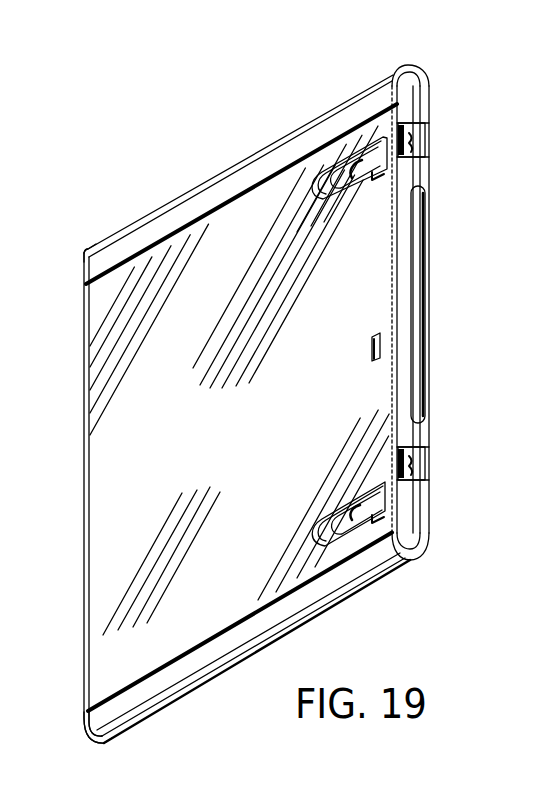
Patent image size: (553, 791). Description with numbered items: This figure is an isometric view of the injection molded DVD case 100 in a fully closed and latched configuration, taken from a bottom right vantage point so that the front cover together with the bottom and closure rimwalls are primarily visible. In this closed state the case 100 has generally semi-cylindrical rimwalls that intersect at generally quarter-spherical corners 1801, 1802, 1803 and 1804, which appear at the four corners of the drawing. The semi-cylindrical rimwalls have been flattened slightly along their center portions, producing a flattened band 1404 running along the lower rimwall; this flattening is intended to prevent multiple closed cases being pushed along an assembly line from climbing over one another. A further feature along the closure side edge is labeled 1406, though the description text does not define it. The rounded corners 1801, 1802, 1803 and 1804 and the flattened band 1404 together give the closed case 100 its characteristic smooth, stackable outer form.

The DVD case 100 is at (214, 122).
The flattened band 1404 is at (320, 613).
The side edge of frame 1406 is at (430, 103).
The quarter-spherical corner 1801 is at (87, 252).
The quarter-spherical corner 1802 is at (404, 68).
The quarter-spherical corner 1803 is at (423, 554).
The quarter-spherical corner 1804 is at (86, 729).